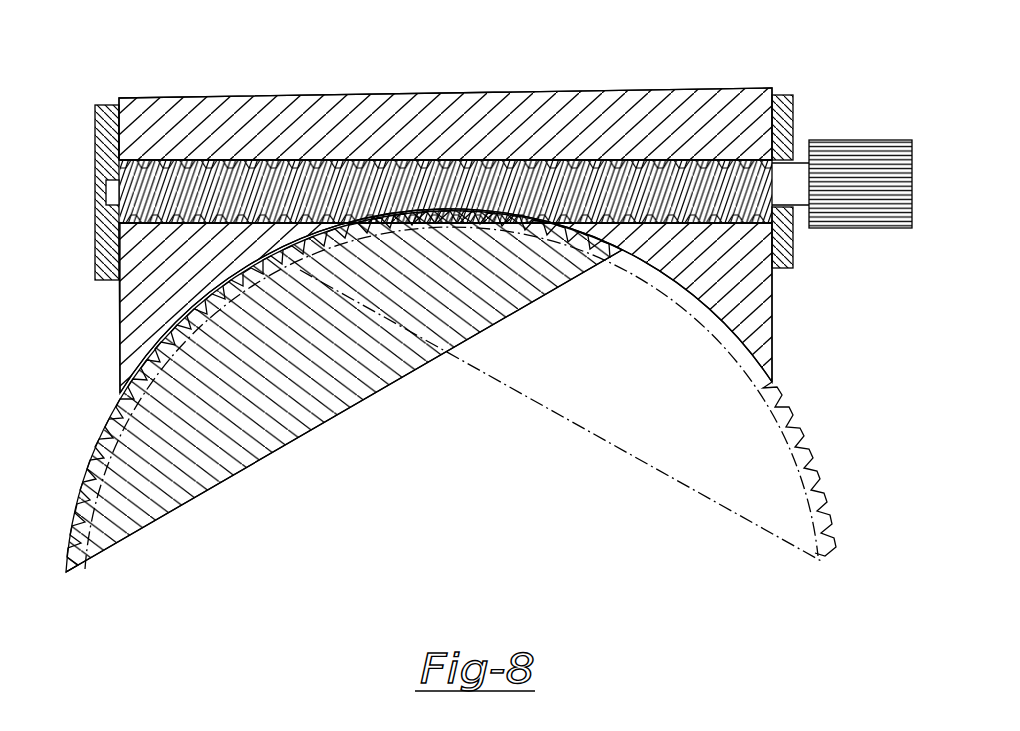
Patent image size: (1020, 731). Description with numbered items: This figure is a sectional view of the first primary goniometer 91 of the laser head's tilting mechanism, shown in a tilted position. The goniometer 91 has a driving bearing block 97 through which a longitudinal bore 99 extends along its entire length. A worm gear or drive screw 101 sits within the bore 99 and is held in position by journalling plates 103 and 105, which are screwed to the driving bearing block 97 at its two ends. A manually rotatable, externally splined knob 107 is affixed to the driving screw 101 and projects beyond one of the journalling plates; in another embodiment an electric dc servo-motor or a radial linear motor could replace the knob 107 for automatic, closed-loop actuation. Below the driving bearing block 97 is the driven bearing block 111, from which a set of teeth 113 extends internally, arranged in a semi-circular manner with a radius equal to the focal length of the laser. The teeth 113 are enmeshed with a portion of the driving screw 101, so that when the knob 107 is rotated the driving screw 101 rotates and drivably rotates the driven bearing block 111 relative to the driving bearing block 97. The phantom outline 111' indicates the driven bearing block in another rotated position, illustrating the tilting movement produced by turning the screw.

The first primary goniometer 91 is at (460, 470).
The driving bearing block 97 is at (188, 118).
The longitudinal bore 99 is at (612, 191).
The worm gear or drive screw 101 is at (553, 187).
The journalling plate 103 is at (790, 242).
The journalling plate 105 is at (97, 250).
The manually rotatable, externally splined knob 107 is at (877, 160).
The driven bearing block 111 is at (451, 391).
The driven bearing block (alternate rotated position) 111' is at (454, 398).
The set of teeth 113 is at (92, 468).